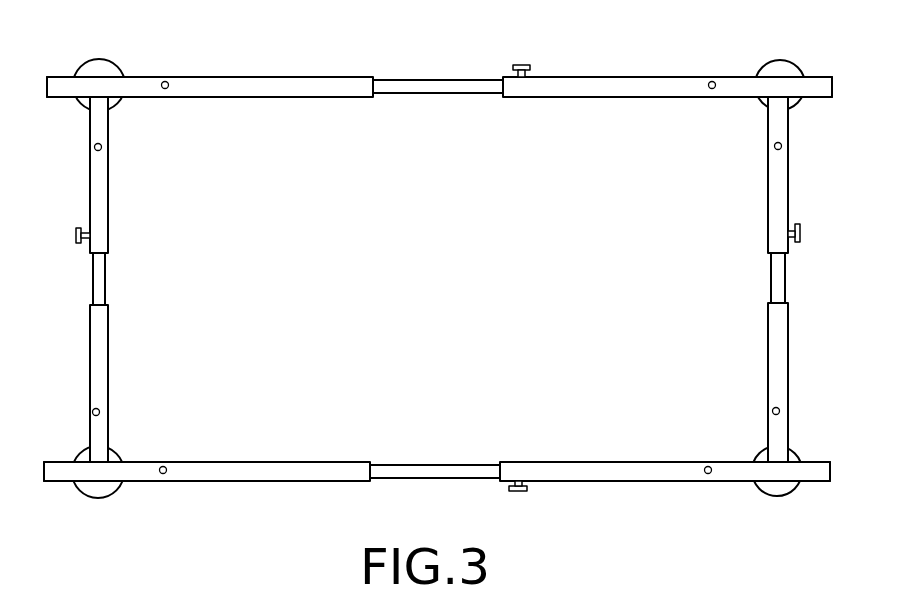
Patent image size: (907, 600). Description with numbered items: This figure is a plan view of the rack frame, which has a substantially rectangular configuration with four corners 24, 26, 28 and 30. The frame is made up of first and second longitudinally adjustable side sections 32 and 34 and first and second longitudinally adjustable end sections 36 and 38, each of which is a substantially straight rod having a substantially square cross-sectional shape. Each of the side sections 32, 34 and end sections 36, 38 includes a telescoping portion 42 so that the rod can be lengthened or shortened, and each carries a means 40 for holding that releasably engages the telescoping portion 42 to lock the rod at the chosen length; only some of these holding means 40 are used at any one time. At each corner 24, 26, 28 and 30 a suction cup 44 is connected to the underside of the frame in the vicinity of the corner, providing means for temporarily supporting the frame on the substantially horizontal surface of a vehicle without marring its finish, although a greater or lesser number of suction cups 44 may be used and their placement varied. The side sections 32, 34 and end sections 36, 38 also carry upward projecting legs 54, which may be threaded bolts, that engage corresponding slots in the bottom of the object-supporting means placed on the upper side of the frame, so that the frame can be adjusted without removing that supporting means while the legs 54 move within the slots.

The corner 24 is at (63, 76).
The corner 26 is at (804, 96).
The corner 28 is at (813, 463).
The corner 30 is at (63, 482).
The first longitudinally adjustable side section 32 is at (688, 76).
The second longitudinally adjustable side section 34 is at (686, 482).
The first longitudinally adjustable end section 36 is at (90, 182).
The second longitudinally adjustable end section 38 is at (790, 178).
The means for holding 40 is at (531, 68).
The telescoping portion 42 is at (503, 99).
The suction cup 44 is at (121, 72).
The upward projecting leg 54 is at (169, 84).